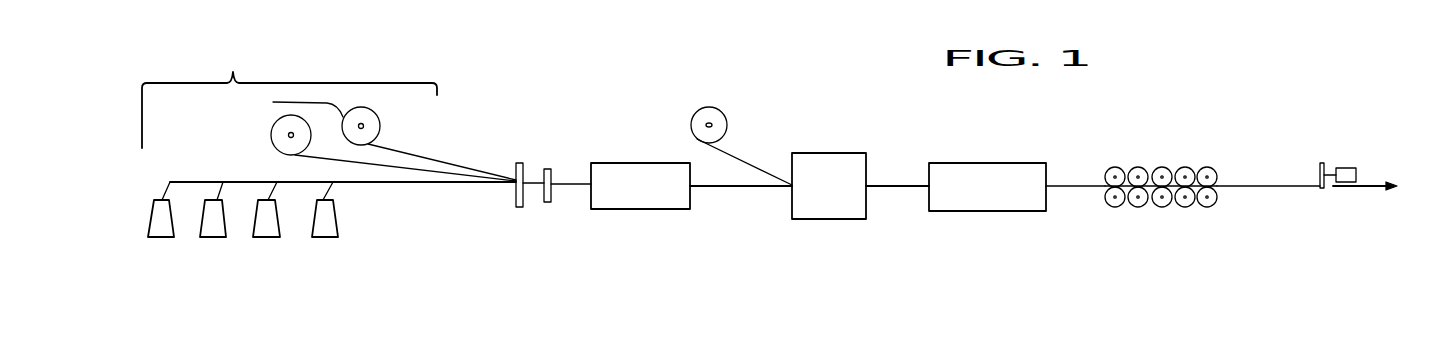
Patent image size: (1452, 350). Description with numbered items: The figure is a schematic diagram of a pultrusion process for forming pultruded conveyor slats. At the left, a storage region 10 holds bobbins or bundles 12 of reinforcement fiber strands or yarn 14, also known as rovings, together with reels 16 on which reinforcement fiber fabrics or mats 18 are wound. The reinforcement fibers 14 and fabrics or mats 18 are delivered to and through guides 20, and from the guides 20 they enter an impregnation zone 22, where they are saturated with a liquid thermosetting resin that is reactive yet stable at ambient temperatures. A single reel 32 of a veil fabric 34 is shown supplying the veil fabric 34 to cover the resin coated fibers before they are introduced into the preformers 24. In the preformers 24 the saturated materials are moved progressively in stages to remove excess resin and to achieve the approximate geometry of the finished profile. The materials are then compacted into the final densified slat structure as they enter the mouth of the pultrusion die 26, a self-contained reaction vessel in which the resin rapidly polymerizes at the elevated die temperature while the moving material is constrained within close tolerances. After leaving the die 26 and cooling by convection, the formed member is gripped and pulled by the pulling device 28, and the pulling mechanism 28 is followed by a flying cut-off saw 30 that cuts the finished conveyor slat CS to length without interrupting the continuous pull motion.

The storage region 10 is at (289, 95).
The bobbins or bundles 12 is at (167, 228).
The reinforcement fiber strands or yarn 14 is at (403, 185).
The reels 16 is at (282, 125).
The reinforcement fiber fabrics or mats 18 is at (425, 168).
The guides 20 is at (548, 206).
The impregnation zone 22 is at (633, 206).
The preformers 24 is at (828, 212).
The pultrusion die 26 is at (985, 203).
The pulling device 28 is at (1160, 214).
The flying cut-off saw 30 is at (1347, 168).
The reel 32 is at (692, 123).
The veil fabric 34 is at (752, 163).
The conveyor slat CS is at (1272, 188).